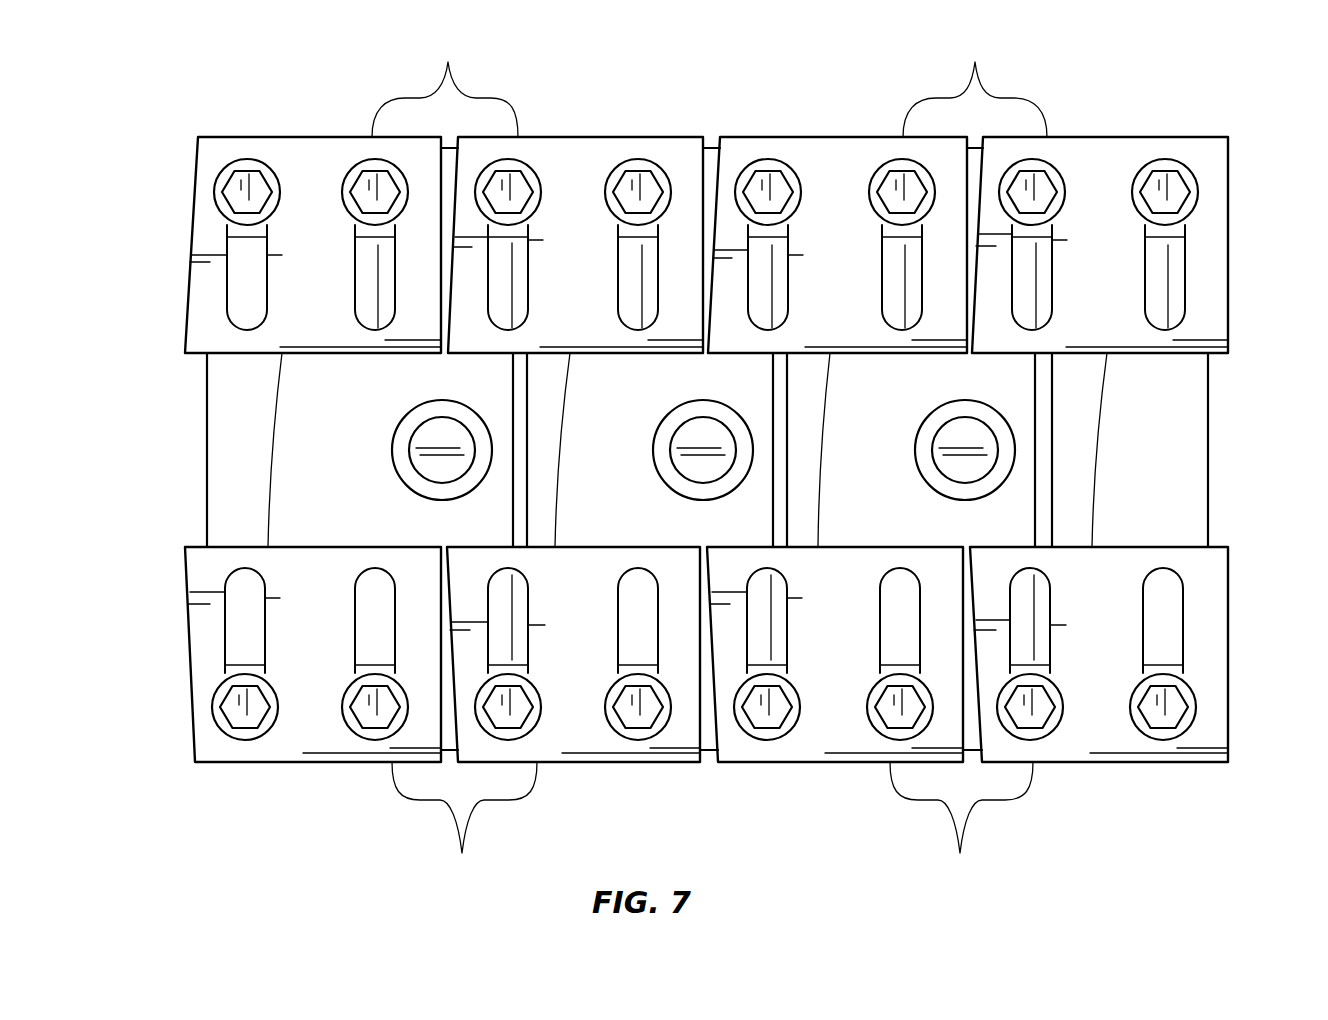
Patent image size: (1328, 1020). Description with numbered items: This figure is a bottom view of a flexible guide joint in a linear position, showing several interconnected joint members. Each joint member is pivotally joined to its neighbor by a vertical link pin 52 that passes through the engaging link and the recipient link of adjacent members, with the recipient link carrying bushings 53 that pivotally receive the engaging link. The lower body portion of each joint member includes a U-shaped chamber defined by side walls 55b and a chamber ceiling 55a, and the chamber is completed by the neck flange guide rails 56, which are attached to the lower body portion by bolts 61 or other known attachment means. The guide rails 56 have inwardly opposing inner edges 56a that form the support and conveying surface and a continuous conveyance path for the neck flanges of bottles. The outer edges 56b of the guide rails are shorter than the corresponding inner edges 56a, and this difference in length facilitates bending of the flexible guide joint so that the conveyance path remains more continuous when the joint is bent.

The vertical link pin 52 is at (442, 470).
The bushing 53 is at (407, 427).
The chamber ceiling 55a is at (235, 415).
The side wall 55b is at (250, 237).
The neck flange guide rail 56 is at (328, 305).
The inner edge 56a is at (307, 477).
The outer edge 56b is at (479, 60).
The bolt 61 is at (613, 192).